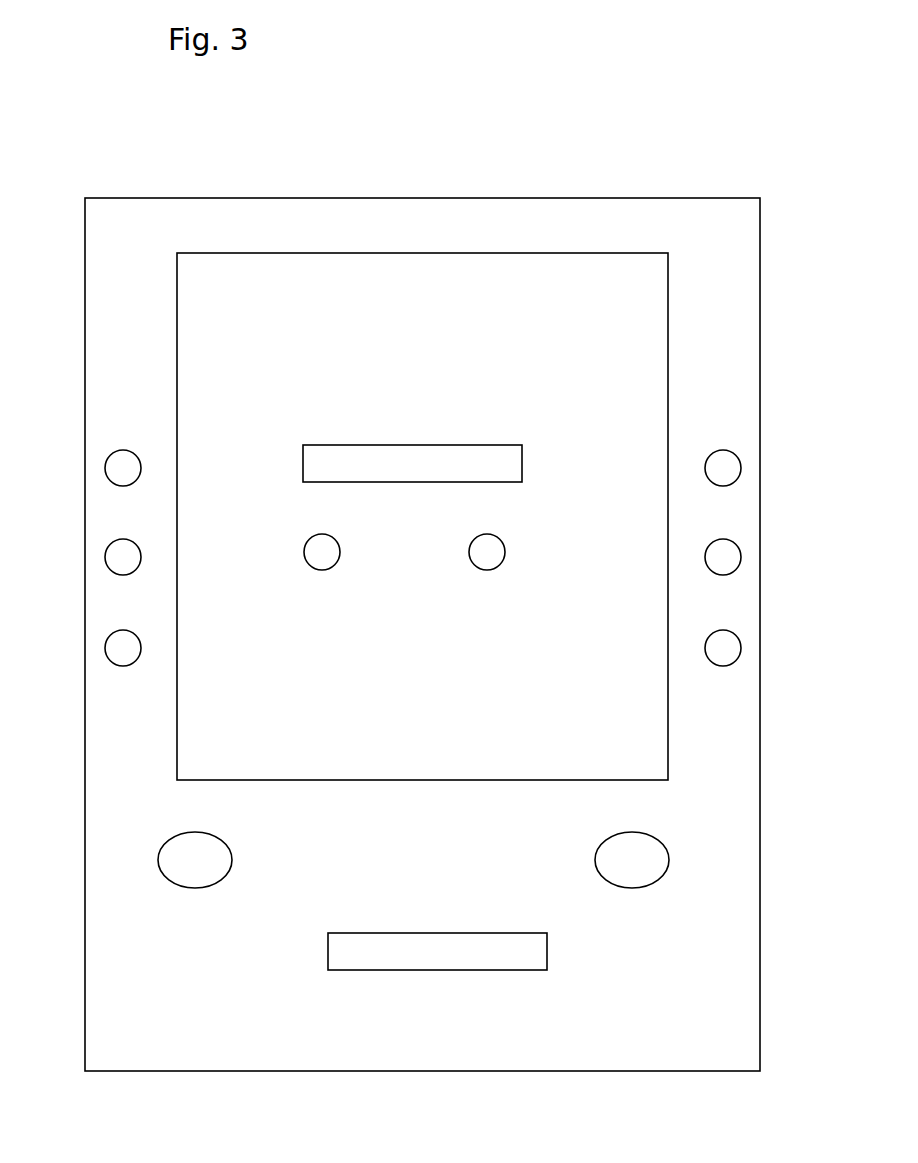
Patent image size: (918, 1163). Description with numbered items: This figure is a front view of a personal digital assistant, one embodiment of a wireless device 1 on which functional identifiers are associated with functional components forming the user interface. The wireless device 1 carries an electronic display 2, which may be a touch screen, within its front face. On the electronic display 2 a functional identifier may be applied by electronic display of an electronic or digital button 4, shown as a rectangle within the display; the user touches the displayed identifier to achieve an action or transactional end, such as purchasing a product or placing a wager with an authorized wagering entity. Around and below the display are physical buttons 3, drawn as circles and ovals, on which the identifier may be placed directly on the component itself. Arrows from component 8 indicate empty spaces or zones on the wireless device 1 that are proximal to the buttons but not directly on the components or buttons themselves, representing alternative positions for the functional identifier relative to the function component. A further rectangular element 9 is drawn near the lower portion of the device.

The wireless device 1 is at (81, 196).
The electronic display 2 is at (383, 250).
The physical buttons 3 is at (708, 482).
The electronic button 4 is at (407, 443).
The component 8 is at (640, 988).
The connector 9 is at (431, 973).